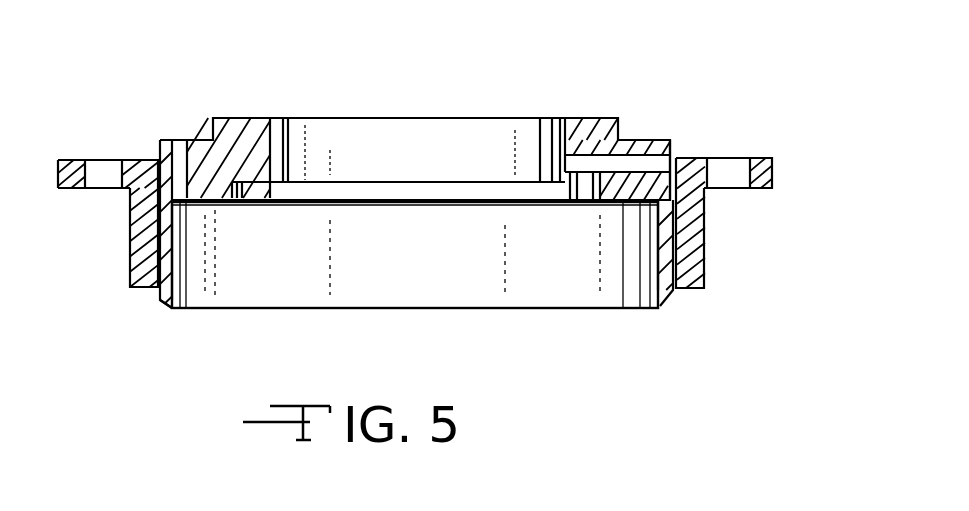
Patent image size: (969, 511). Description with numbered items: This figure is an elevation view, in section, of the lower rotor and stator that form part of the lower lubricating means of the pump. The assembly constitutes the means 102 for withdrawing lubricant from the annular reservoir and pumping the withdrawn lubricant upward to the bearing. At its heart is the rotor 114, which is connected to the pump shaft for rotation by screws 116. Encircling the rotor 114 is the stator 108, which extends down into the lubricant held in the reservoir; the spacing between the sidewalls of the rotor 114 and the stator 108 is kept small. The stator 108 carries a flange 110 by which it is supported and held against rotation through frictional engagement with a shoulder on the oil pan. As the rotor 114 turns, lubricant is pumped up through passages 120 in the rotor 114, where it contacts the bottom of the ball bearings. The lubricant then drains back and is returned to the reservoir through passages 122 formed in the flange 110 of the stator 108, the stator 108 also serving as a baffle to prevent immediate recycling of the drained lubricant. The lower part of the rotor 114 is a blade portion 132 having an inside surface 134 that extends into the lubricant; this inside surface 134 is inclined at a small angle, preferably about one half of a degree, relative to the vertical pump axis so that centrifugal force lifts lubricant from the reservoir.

The means for withdrawing lubricant 102 is at (718, 217).
The stator 108 is at (704, 270).
The flange 110 is at (767, 160).
The rotor 114 is at (662, 307).
The screws 116 is at (633, 160).
The passages 120 is at (180, 150).
The passages 122 is at (105, 170).
The blade portion 132 is at (163, 305).
The inside surface 134 is at (170, 268).